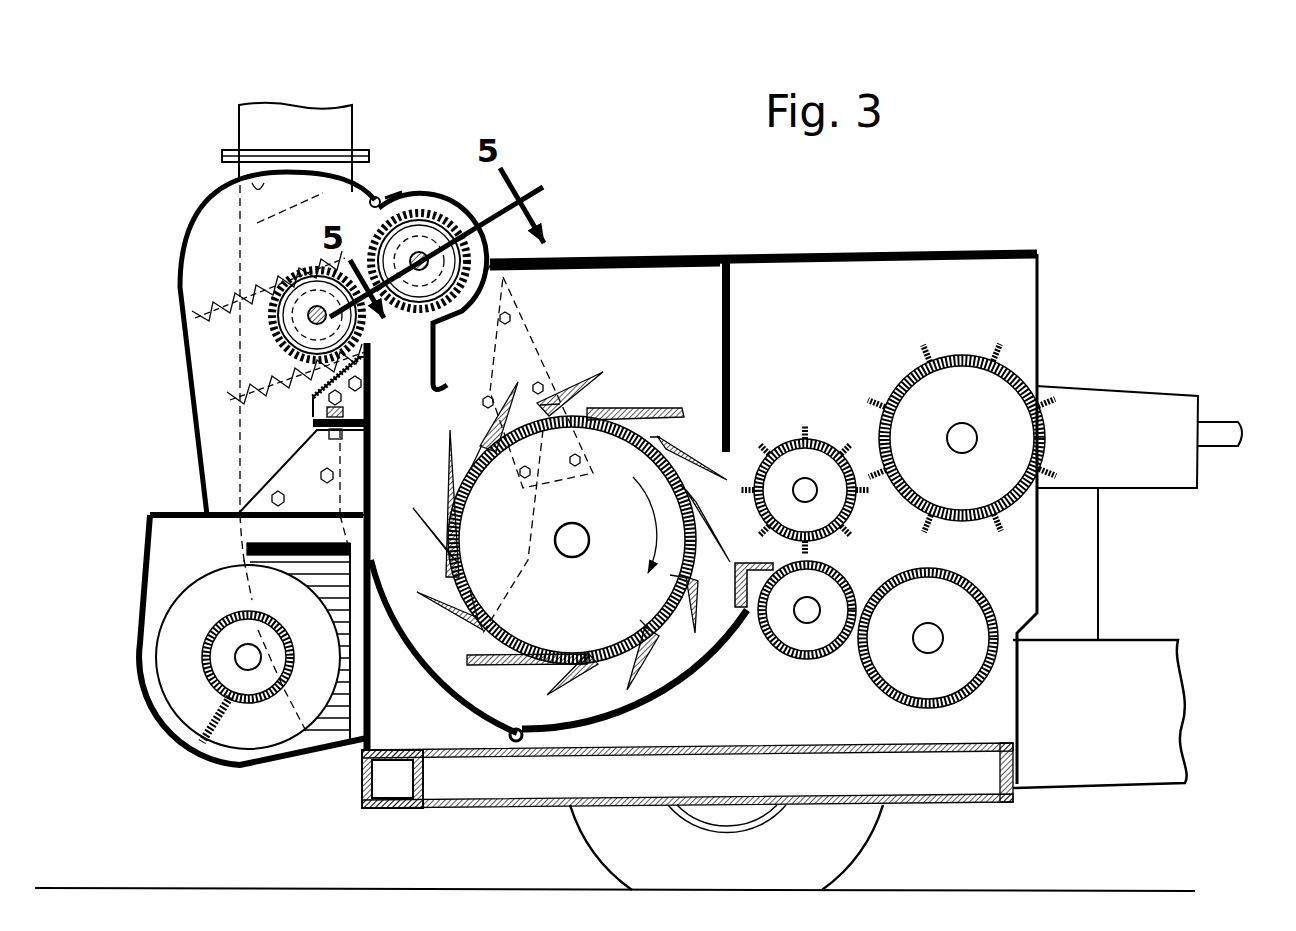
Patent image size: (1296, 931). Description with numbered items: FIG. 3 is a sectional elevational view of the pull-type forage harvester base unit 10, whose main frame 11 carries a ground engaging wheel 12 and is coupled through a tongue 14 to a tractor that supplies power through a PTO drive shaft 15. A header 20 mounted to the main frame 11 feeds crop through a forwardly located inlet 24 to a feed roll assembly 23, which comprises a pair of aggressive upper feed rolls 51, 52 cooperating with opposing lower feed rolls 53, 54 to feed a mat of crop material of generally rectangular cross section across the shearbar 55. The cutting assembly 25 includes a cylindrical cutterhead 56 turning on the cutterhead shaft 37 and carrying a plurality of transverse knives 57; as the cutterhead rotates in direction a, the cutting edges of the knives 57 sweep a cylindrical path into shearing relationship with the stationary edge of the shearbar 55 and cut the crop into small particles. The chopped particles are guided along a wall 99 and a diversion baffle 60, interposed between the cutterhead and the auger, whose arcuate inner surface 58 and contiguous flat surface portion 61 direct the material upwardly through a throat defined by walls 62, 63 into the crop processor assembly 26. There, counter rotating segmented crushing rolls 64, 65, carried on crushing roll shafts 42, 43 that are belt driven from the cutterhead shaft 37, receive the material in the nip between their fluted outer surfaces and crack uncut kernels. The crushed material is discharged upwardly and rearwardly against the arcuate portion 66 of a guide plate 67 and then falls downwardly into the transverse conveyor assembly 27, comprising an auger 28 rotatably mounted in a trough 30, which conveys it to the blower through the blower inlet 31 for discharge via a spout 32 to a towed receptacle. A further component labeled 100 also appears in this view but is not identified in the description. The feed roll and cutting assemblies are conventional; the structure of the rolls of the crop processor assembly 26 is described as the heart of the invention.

The forage harvester base unit 10 is at (905, 185).
The main frame 11 is at (1005, 800).
The ground engaging wheel 12 is at (848, 856).
The tongue 14 is at (1110, 386).
The PTO drive shaft 15 is at (1228, 420).
The header 20 is at (1147, 600).
The feed roll assembly 23 is at (925, 300).
The inlet 24 is at (990, 555).
The cutting assembly 25 is at (586, 292).
The crop processor assembly 26 is at (398, 178).
The transverse conveyor assembly 27 is at (133, 666).
The auger 28 is at (240, 732).
The trough 30 is at (168, 733).
The inlet 31 is at (342, 753).
The spout 32 is at (250, 128).
The cutterhead shaft 37 is at (578, 555).
The crushing roll shaft 42 is at (483, 283).
The crushing roll shaft 43 is at (312, 318).
The upper feed roll 51 is at (798, 437).
The upper feed roll 52 is at (962, 355).
The lower feed roll 53 is at (805, 660).
The lower feed roll 54 is at (945, 705).
The shearbar 55 is at (742, 612).
The cylindrical cutterhead 56 is at (607, 410).
The transverse knives 57 is at (667, 427).
The arcuate inner surface 58 is at (413, 630).
The diversion baffle 60 is at (463, 710).
The flat surface portion 61 is at (372, 470).
The wall 62 is at (347, 418).
The wall 63 is at (347, 440).
The crushing roll 64 is at (312, 335).
The crushing roll 65 is at (440, 217).
The arcuate portion 66 is at (260, 185).
The guide plate 67 is at (183, 232).
The wall 99 is at (633, 700).
The bracket 100 is at (273, 473).